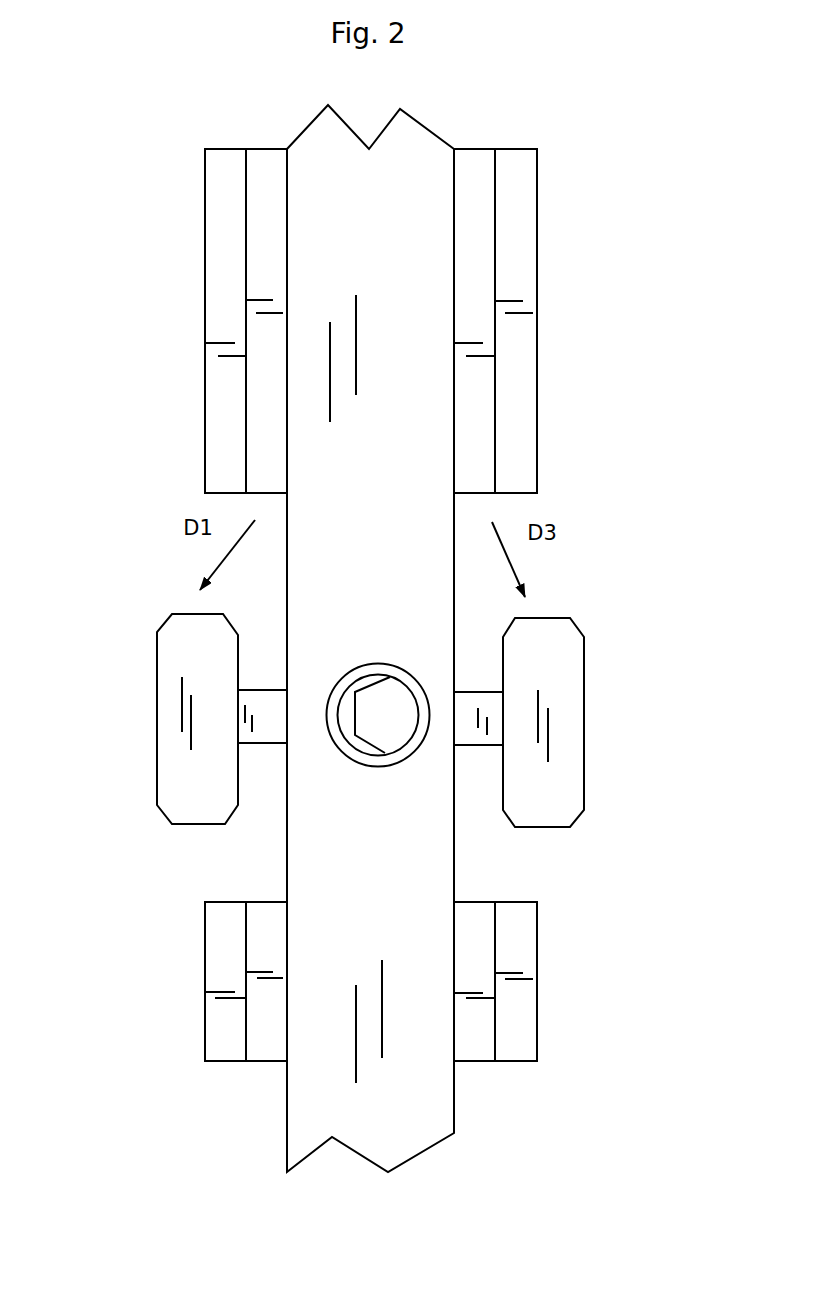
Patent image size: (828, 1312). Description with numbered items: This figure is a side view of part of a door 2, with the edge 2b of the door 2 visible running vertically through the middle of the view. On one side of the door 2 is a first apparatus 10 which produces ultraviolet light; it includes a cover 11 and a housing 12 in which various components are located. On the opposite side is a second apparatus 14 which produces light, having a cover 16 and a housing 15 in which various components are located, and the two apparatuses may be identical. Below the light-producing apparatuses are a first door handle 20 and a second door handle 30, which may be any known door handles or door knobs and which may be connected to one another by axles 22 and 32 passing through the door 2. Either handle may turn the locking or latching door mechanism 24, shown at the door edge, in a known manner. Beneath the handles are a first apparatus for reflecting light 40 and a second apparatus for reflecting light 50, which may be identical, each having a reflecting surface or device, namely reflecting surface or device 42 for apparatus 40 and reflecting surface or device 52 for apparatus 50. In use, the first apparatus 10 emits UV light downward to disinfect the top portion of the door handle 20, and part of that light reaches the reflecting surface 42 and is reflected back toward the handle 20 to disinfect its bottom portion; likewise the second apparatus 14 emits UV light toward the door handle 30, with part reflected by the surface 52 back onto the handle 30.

The door 2 is at (405, 1098).
The edge of the door 2b is at (403, 863).
The first apparatus which produces light 10 is at (198, 286).
The cover 11 is at (218, 167).
The housing 12 is at (262, 187).
The second apparatus which produces light 14 is at (545, 298).
The housing 15 is at (475, 168).
The cover 16 is at (520, 205).
The first door handle 20 is at (188, 773).
The axle 22 is at (266, 732).
The locking or latching door mechanism 24 is at (378, 727).
The second door handle 30 is at (555, 788).
The axle 32 is at (468, 735).
The first apparatus which reflects light 40 is at (202, 955).
The reflecting surface or device 42 is at (223, 902).
The second apparatus which reflects light 50 is at (544, 951).
The reflecting surface or device 52 is at (511, 898).